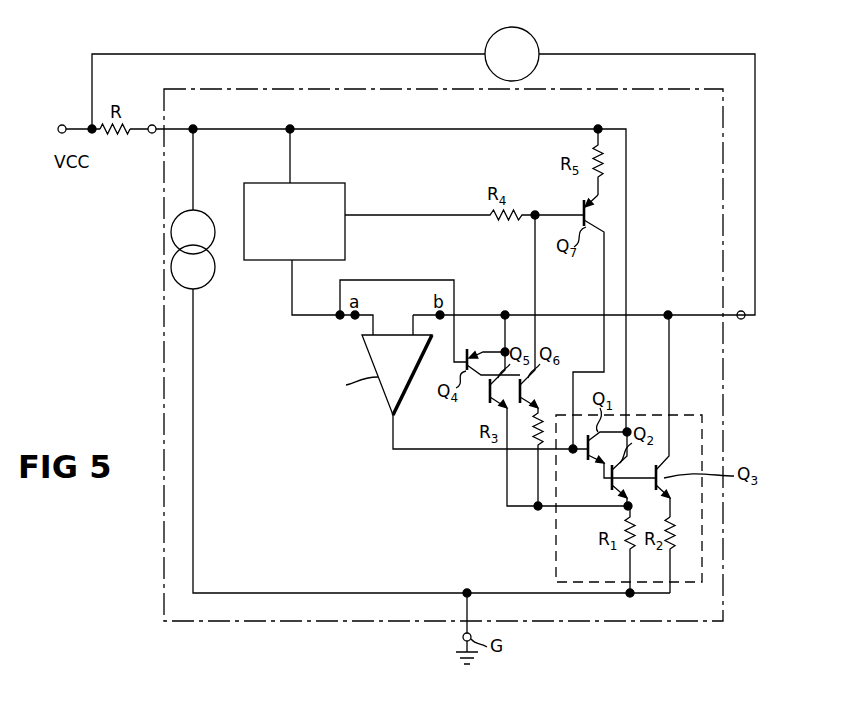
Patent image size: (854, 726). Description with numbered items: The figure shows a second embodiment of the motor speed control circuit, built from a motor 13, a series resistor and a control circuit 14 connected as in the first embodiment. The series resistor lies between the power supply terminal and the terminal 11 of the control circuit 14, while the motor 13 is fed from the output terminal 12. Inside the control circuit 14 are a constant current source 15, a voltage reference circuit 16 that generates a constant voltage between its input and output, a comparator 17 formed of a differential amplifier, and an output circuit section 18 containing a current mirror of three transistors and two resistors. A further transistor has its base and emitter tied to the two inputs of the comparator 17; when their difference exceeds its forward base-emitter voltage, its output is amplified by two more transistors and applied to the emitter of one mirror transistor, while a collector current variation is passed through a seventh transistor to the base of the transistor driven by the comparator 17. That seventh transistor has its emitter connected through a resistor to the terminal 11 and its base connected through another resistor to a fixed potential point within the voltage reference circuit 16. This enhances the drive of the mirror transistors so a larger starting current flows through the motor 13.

The terminal 11 is at (152, 133).
The output terminal 12 is at (742, 320).
The motor 13 is at (531, 36).
The control circuit 14 is at (684, 622).
The constant current source 15 is at (200, 213).
The voltage reference circuit 16 is at (311, 183).
The first voltage comparator 17 is at (362, 345).
The output circuit section 18 is at (680, 415).